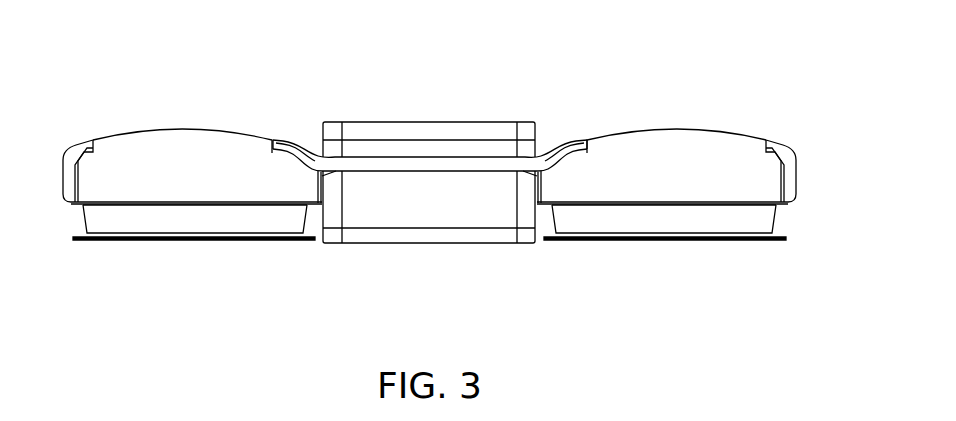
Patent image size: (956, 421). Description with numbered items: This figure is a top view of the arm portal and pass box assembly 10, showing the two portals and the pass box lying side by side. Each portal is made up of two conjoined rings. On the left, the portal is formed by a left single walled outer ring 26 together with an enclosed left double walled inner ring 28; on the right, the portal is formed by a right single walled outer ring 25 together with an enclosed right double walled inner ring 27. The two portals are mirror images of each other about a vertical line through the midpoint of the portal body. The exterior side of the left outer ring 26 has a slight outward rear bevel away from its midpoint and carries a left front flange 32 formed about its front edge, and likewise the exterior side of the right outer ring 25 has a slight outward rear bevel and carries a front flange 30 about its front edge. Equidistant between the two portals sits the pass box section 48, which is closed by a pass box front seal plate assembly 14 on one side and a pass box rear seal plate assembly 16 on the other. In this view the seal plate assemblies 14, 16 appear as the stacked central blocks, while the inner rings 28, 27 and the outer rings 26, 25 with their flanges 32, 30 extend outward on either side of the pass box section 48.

The arm portal and pass box assembly 10 is at (645, 51).
The pass box front seal plate assembly 14 is at (398, 237).
The pass box rear seal plate assembly 16 is at (452, 130).
The right single walled outer ring 25 is at (737, 222).
The left single walled outer ring 26 is at (165, 223).
The right double walled inner ring 27 is at (712, 152).
The left double walled inner ring 28 is at (175, 162).
The front flange 30 is at (542, 240).
The left front flange 32 is at (75, 238).
The pass box section 48 is at (478, 207).